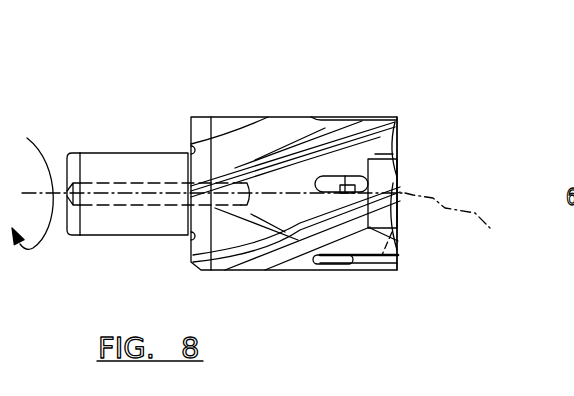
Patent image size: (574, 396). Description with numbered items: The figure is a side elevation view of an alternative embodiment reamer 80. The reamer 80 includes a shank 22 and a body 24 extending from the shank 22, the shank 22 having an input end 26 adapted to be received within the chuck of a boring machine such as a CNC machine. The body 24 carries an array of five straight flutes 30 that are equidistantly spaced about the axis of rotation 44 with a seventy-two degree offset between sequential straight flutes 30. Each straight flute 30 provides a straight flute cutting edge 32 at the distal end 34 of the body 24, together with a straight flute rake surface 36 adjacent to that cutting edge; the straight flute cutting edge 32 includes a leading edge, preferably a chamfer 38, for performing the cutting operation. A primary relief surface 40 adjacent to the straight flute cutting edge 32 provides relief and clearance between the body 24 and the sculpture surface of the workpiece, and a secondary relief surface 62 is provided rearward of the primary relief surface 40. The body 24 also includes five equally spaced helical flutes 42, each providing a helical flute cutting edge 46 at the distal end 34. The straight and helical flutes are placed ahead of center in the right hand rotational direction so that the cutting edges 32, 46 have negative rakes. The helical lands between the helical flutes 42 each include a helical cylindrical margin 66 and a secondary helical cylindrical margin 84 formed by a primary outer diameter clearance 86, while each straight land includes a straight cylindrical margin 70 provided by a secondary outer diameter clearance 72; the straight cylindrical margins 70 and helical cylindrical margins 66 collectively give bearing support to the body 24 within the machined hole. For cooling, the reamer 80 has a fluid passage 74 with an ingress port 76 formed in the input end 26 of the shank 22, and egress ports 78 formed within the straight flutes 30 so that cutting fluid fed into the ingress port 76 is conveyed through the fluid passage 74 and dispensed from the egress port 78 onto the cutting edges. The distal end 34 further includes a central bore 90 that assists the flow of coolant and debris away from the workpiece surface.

The shank 22 is at (108, 146).
The body 24 is at (295, 112).
The input end 26 is at (82, 245).
The straight flute 30 is at (398, 189).
The straight flute cutting edge 32 is at (398, 184).
The distal end 34 is at (407, 121).
The straight flute rake surface 36 is at (358, 186).
The chamfer 38 is at (392, 135).
The primary relief surface 40 is at (398, 182).
The helical flute 42 is at (271, 190).
The axis of rotation 44 is at (459, 224).
The helical flute cutting edge 46 is at (400, 238).
The secondary relief surface 62 is at (397, 243).
The helical cylindrical margin 66 is at (377, 134).
The straight cylindrical margin 70 is at (397, 162).
The secondary outer diameter clearance 72 is at (376, 154).
The fluid passage 74 is at (162, 207).
The ingress port 76 is at (65, 192).
The egress port 78 is at (358, 278).
The reamer 80 is at (264, 36).
The secondary helical cylindrical margin 84 is at (245, 137).
The primary outer diameter clearance 86 is at (345, 138).
The central bore 90 is at (388, 276).